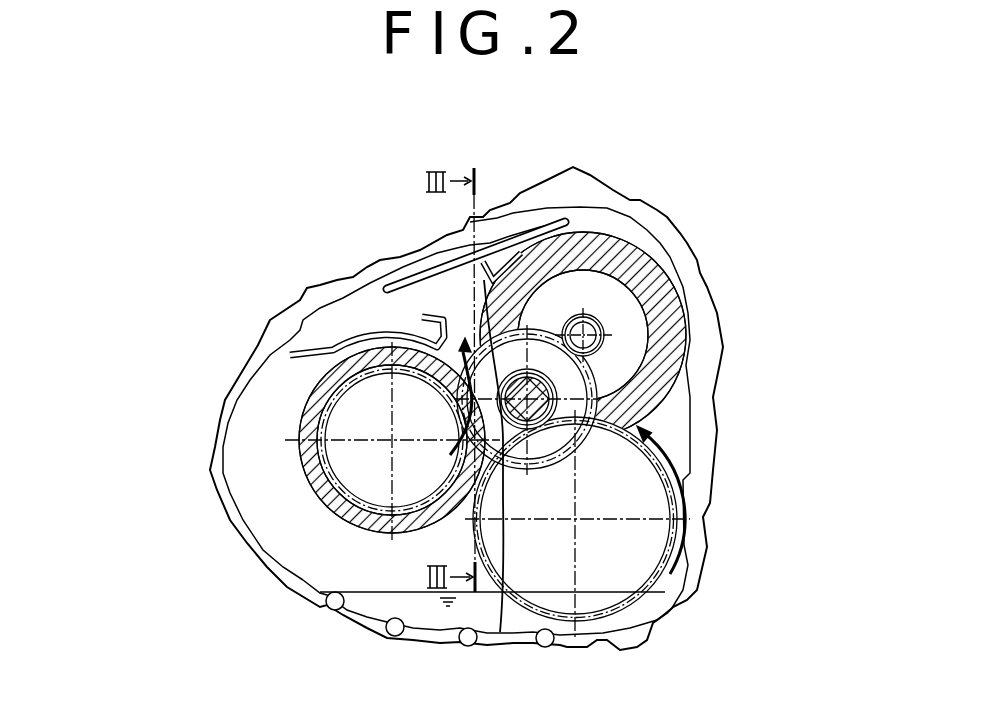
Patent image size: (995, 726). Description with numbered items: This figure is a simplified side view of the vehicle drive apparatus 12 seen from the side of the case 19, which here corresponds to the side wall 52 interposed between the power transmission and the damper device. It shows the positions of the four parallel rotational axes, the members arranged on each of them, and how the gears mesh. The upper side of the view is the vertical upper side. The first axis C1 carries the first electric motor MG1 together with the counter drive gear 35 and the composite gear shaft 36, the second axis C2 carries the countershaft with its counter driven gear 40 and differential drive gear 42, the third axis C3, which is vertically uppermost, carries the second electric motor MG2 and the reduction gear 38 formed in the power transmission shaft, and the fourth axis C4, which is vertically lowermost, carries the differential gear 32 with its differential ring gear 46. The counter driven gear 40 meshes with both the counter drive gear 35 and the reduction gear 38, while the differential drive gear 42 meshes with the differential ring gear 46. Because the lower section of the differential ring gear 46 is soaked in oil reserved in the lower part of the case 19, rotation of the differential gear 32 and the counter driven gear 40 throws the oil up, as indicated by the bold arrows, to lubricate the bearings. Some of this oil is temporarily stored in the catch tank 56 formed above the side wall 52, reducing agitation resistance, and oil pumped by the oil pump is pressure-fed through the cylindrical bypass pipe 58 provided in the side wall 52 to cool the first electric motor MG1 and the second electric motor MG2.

The vehicle drive apparatus 12 is at (679, 189).
The case 19 is at (263, 452).
The side wall 52 is at (429, 421).
The bypass pipe 58 is at (493, 240).
The counter driven gear 40 is at (551, 338).
The second electric motor MG2 is at (587, 258).
The third axis C3 is at (583, 335).
The reduction gear 38 is at (607, 341).
The counter drive gear 35 is at (376, 365).
The composite gear shaft 36 is at (366, 375).
The second axis C2 is at (527, 399).
The catch tank 56 is at (377, 333).
The first axis C1 is at (392, 440).
The first electric motor MG1 is at (384, 533).
The differential drive gear 42 is at (500, 632).
The fourth axis C4 is at (575, 519).
The differential gear 32 is at (639, 526).
The differential ring gear 46 is at (660, 577).